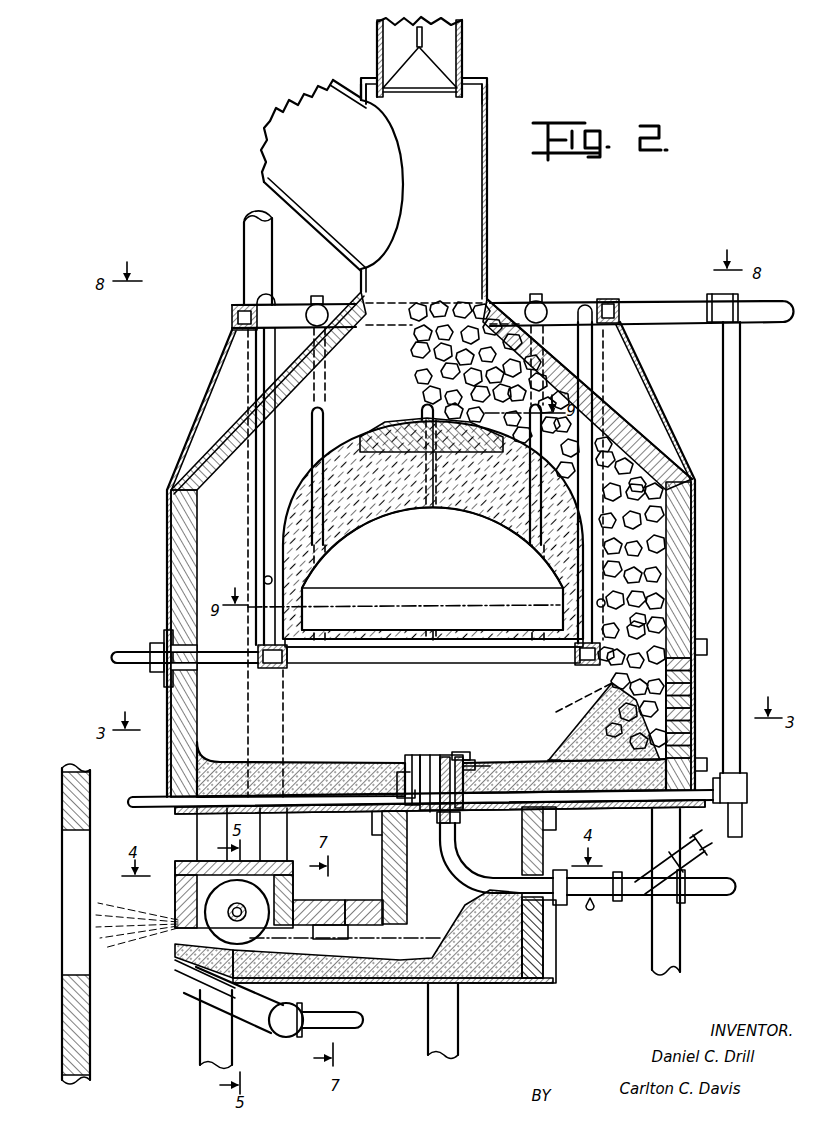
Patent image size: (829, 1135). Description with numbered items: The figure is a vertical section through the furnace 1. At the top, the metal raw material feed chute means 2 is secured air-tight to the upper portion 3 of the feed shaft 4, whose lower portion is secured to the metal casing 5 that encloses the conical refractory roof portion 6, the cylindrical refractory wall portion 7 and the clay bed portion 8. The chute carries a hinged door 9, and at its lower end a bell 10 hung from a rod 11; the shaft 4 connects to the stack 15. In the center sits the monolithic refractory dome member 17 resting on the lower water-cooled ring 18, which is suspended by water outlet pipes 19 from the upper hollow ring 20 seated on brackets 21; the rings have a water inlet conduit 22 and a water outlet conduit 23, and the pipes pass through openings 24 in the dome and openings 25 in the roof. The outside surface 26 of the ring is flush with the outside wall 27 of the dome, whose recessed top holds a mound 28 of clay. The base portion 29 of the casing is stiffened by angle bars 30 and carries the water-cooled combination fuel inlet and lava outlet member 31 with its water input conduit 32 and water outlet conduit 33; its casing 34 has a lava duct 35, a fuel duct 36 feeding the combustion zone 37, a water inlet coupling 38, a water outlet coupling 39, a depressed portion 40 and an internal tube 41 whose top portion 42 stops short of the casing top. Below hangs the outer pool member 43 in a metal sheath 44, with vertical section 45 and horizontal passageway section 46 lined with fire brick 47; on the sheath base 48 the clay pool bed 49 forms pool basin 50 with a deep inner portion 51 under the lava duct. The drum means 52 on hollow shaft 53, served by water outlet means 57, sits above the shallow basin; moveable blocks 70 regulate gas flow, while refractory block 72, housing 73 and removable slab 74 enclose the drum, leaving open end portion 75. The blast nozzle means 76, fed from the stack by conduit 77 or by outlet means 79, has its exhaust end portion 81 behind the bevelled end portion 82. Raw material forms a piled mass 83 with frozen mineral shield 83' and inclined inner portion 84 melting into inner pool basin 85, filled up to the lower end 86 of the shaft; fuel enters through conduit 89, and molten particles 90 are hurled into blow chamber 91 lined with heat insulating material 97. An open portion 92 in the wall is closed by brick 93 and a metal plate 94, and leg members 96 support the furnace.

The furnace 1 is at (732, 498).
The metal raw material feed chute means 2 is at (463, 43).
The upper portion of feed shaft 3 is at (485, 77).
The feed shaft 4 is at (489, 199).
The metal casing 5 is at (500, 306).
The refractory roof portion 6 is at (252, 408).
The refractory wall portion 7 is at (180, 522).
The clay bed portion 8 is at (616, 736).
The door 9 is at (252, 605).
The bell 10 is at (423, 62).
The rod 11 is at (416, 34).
The stack 15 is at (324, 243).
The refractory dome member 17 is at (378, 500).
The lower hollow steel water-cooled ring 18 is at (275, 668).
The water outlet pipes 19 is at (312, 456).
The upper hollow ring 20 is at (608, 298).
The brackets 21 is at (207, 386).
The water inlet conduit 22 is at (229, 664).
The water outlet conduit 23 is at (664, 300).
The openings in the dome 24 is at (264, 580).
The openings in the roof portion 25 is at (275, 408).
The outside surface of the ring 26 is at (606, 656).
The outside wall of the refractory dome 27 is at (644, 622).
The mound of shock-absorbing material 28 is at (404, 420).
The base portion of the casing 29 is at (350, 811).
The angle bars 30 is at (374, 830).
The combination fuel inlet and lava and products of combustion outlet member 31 is at (444, 752).
The water input conduit 32 is at (142, 796).
The water outlet conduit 33 is at (716, 804).
The casing of the member 34 is at (472, 765).
The vertical duct 35 is at (433, 757).
The vertical duct 36 is at (458, 757).
The combustion zone 37 is at (482, 557).
The water inlet coupling 38 is at (400, 772).
The water outlet coupling 39 is at (540, 758).
The groove or depressed portion 40 is at (408, 757).
The vertically extending tube or duct 41 is at (470, 760).
The top portion of the tube 42 is at (466, 752).
The outer pool member 43 is at (559, 931).
The rigid metal sheath 44 is at (556, 972).
The vertical hollow section 45 is at (479, 839).
The horizontally extending pool and heated gas passageway section 46 is at (350, 934).
The fire brick or block 47 is at (541, 980).
The base of the sheath 48 is at (486, 984).
The pool bed 49 is at (388, 980).
The pool basin 50 is at (378, 984).
The inner portion of the basin 51 is at (426, 992).
The drum means 52 is at (205, 893).
The hollow shaft 53 is at (233, 918).
The stationary water outlet means 57 is at (598, 912).
The moveable elongated blocks 70 is at (338, 906).
The refractory block 72 is at (362, 900).
The refractory housing 73 is at (293, 868).
The removable slab 74 is at (190, 861).
The open end portion of the passageway 75 is at (132, 938).
The blast nozzle means 76 is at (245, 1022).
The conduit 77 is at (243, 262).
The steam or compressed air or gas outlet means 79 is at (322, 1012).
The exhaust end portion of the nozzle 81 is at (178, 970).
The bevelled end portion 82 is at (176, 948).
The piled mass 83 is at (593, 525).
The frozen mineral shield 83' is at (584, 689).
The inner portion of the piled mass 84 is at (565, 720).
The inner pool basin 85 is at (346, 765).
The lower end of the shaft 86 is at (447, 318).
The fuel and air conduit 89 is at (600, 895).
The molten particles 90 is at (142, 928).
The blow chamber 91 is at (92, 782).
The open portion 92 is at (705, 657).
The brick 93 is at (696, 690).
The metal plate 94 is at (702, 766).
The leg members 96 is at (684, 940).
The heat insulating material 97 is at (131, 801).